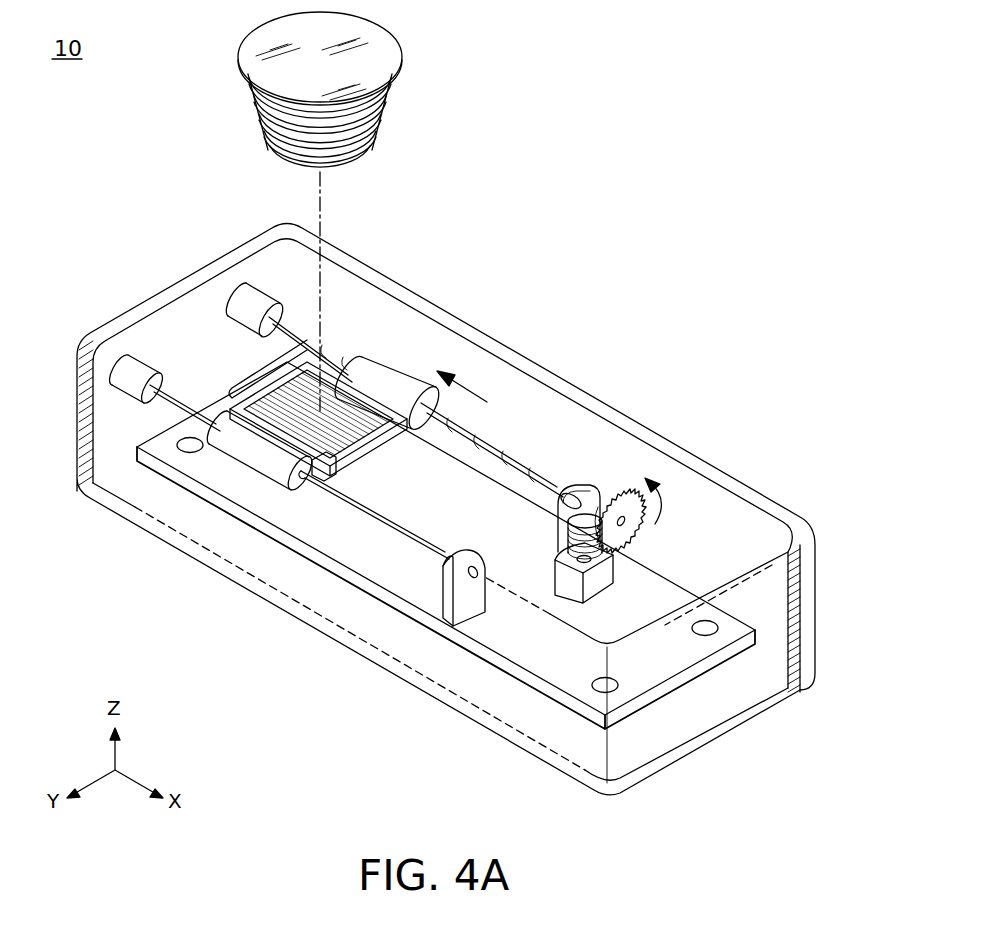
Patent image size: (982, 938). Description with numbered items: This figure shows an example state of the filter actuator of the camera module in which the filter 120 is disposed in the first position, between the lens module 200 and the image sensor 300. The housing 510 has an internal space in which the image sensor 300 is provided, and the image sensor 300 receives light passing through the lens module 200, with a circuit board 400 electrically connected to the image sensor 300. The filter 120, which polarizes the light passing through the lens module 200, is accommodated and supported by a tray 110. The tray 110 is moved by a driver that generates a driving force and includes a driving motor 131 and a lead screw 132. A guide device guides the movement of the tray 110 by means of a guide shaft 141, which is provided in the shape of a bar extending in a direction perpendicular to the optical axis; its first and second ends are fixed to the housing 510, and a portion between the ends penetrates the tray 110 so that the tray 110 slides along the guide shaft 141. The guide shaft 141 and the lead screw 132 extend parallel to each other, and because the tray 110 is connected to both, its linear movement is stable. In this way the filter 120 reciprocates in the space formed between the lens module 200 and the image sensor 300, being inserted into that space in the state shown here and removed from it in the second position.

The lens module 200 is at (430, 60).
The filter 120 is at (347, 412).
The tray 110 is at (413, 440).
The lead screw 132 is at (537, 472).
The driving motor 131 is at (600, 577).
The image sensor 300 is at (300, 483).
The guide shaft 141 is at (392, 535).
The circuit board 400 is at (556, 658).
The housing 510 is at (716, 737).